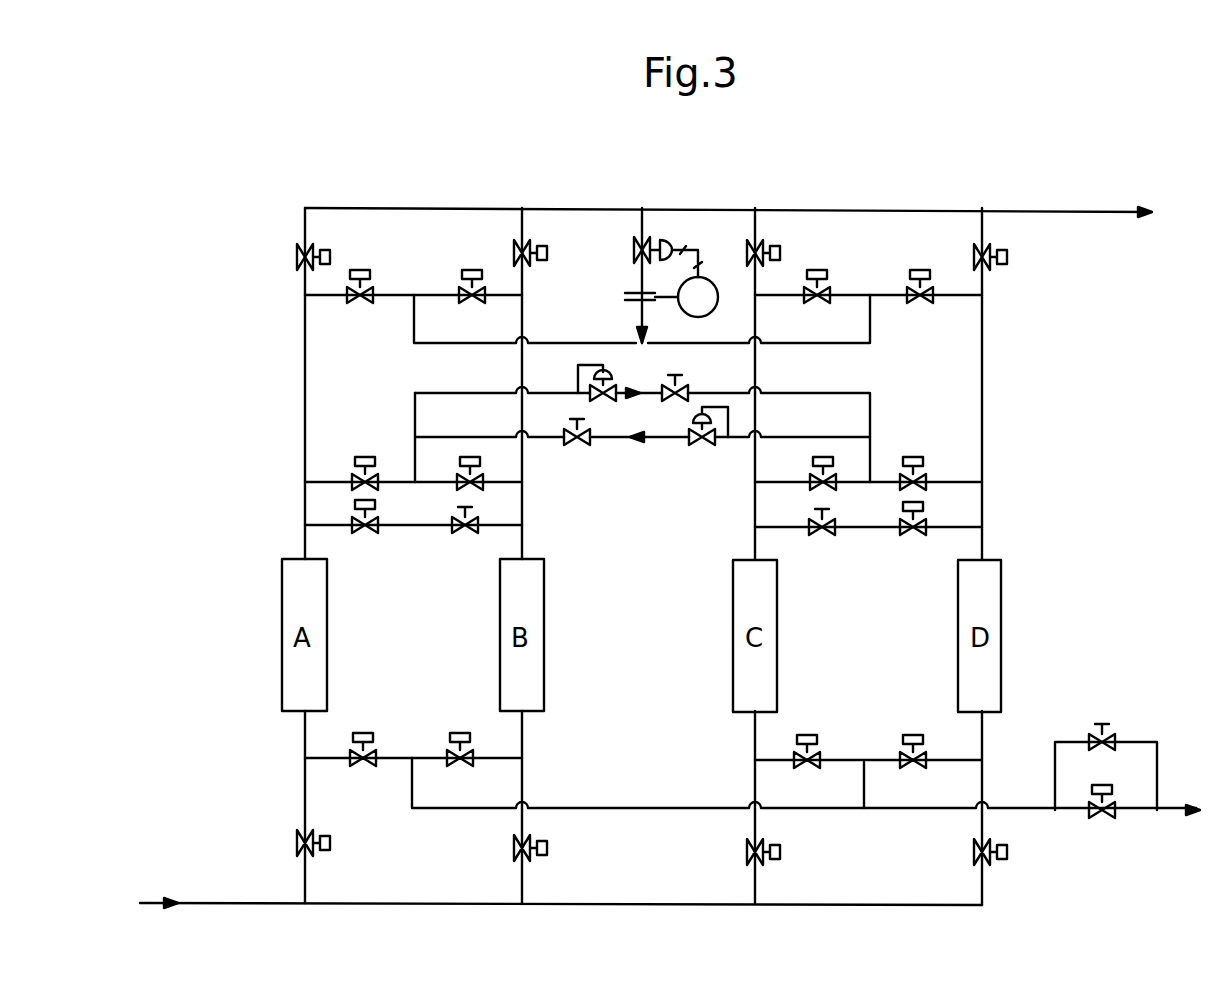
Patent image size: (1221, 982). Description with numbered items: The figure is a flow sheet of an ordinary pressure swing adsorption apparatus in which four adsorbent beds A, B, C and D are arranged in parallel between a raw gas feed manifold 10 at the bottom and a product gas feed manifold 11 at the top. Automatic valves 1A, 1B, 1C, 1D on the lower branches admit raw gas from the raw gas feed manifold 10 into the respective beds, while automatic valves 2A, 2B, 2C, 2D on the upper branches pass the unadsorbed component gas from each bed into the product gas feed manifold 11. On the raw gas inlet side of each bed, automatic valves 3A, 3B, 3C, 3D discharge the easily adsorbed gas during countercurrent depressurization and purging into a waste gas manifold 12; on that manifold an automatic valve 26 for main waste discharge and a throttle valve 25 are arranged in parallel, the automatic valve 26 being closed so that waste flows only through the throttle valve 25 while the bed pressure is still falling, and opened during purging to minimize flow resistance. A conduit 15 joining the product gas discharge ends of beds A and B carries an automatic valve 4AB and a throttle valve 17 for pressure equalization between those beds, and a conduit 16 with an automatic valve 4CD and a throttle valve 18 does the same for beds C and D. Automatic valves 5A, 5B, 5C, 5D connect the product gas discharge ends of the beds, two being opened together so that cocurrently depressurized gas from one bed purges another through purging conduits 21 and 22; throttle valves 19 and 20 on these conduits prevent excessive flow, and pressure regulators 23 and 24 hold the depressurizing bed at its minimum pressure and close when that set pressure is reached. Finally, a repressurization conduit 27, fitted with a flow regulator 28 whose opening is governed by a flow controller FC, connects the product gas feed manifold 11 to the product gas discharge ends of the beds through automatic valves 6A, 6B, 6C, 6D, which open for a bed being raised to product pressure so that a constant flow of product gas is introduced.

The raw gas feed manifold 10 is at (243, 903).
The product gas feed manifold 11 is at (1078, 212).
The waste gas manifold 12 is at (632, 808).
The conduit 15 is at (415, 526).
The conduit 16 is at (868, 528).
The throttle valve 17 is at (464, 534).
The throttle valve 18 is at (820, 536).
The throttle valve 19 is at (684, 383).
The throttle valve 20 is at (577, 445).
The purging conduit 21 is at (821, 393).
The purging conduit 22 is at (660, 440).
The pressure regulator 23 is at (612, 378).
The pressure regulator 24 is at (704, 447).
The throttle valve 25 is at (1106, 736).
The automatic valve for main waste discharge 26 is at (1098, 822).
The repressurization conduit 27 is at (646, 218).
The flow control valve 28 is at (636, 256).
The automatic valve 1A is at (331, 846).
The automatic valve 1B is at (548, 851).
The automatic valve 1C is at (781, 857).
The automatic valve 1D is at (1005, 858).
The automatic valve 2A is at (297, 253).
The automatic valve 2B is at (551, 253).
The automatic valve 2C is at (783, 256).
The automatic valve 2D is at (1010, 257).
The automatic valve 3A is at (364, 733).
The automatic valve 3B is at (460, 733).
The automatic valve 3C is at (807, 735).
The automatic valve 3D is at (913, 735).
The automatic valve 4AB is at (365, 535).
The automatic valve 4CD is at (916, 537).
The automatic valve 5A is at (365, 455).
The automatic valve 5B is at (462, 478).
The automatic valve 5C is at (813, 470).
The automatic valve 5D is at (913, 457).
The automatic valve 6A is at (361, 270).
The automatic valve 6B is at (472, 270).
The automatic valve 6C is at (827, 274).
The automatic valve 6D is at (920, 270).